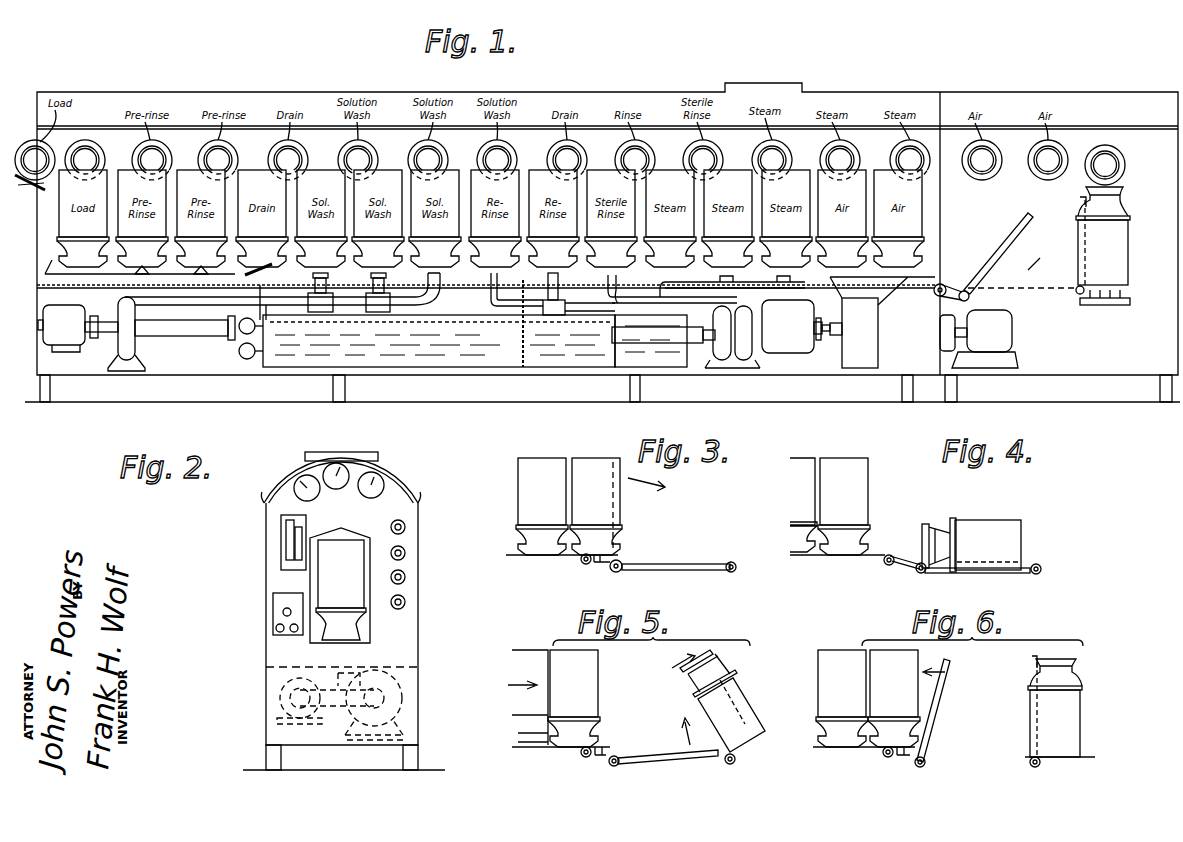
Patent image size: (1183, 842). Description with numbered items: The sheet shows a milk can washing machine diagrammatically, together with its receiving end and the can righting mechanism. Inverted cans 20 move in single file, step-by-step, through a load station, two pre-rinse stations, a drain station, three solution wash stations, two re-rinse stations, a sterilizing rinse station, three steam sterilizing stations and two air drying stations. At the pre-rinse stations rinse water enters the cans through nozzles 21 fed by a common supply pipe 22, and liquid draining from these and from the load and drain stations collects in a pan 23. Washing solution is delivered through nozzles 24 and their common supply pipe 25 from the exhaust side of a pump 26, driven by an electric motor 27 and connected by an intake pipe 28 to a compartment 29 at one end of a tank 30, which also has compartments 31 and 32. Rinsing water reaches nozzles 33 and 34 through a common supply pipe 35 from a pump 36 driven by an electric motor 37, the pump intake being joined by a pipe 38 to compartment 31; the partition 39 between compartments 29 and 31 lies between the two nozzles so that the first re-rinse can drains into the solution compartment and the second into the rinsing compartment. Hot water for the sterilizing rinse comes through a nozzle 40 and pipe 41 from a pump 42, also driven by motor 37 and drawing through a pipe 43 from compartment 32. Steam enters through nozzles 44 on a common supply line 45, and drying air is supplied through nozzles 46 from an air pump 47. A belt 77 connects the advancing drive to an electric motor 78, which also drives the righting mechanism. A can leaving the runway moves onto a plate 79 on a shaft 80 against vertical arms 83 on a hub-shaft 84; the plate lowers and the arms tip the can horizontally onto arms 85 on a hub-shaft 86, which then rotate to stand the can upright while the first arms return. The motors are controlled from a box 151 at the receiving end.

In FIG. 1, the cans 20 is at (62, 212).
In FIG. 2, the cans 20 is at (340, 585).
In FIG. 3, the cans 20 is at (585, 465).
In FIG. 4, the cans 20 is at (840, 466).
In FIG. 5, the cans 20 is at (562, 668).
In FIG. 6, the cans 20 is at (888, 672).
In FIG. 1, the nozzles 21 is at (142, 270).
In FIG. 1, the common supply pipe 22 is at (55, 274).
In FIG. 1, the pan 23 is at (250, 272).
In FIG. 1, the nozzles 24 is at (326, 284).
In FIG. 1, the common supply pipe 25 is at (298, 292).
In FIG. 1, the pump 26 is at (136, 345).
In FIG. 2, the pump 26 is at (402, 698).
In FIG. 1, the electric motor 27 is at (55, 343).
In FIG. 2, the electric motor 27 is at (280, 698).
In FIG. 1, the intake pipe 28 is at (190, 330).
In FIG. 1, the compartment 29 is at (292, 360).
In FIG. 1, the tank 30 is at (525, 360).
In FIG. 1, the compartment 31 is at (575, 362).
In FIG. 1, the compartment 32 is at (662, 360).
In FIG. 1, the nozzle 33 is at (490, 282).
In FIG. 1, the nozzle 34 is at (549, 275).
In FIG. 1, the common supply pipe 35 is at (578, 305).
In FIG. 1, the pump 36 is at (722, 358).
In FIG. 1, the electric motor 37 is at (790, 345).
In FIG. 1, the pipe 38 is at (630, 340).
In FIG. 1, the partition 39 is at (520, 340).
In FIG. 1, the nozzle 40 is at (616, 283).
In FIG. 1, the pipe 41 is at (660, 300).
In FIG. 1, the pump 42 is at (744, 358).
In FIG. 1, the pipe 43 is at (705, 345).
In FIG. 1, the nozzles 44 is at (665, 276).
In FIG. 1, the common supply line 45 is at (812, 280).
In FIG. 1, the nozzles 46 is at (893, 283).
In FIG. 1, the air pump 47 is at (872, 322).
In FIG. 1, the belt 77 is at (940, 345).
In FIG. 1, the electric motor 78 is at (990, 338).
In FIG. 1, the plate 79 is at (955, 278).
In FIG. 3, the plate 79 is at (598, 565).
In FIG. 4, the plate 79 is at (905, 568).
In FIG. 5, the plate 79 is at (600, 758).
In FIG. 6, the plate 79 is at (902, 758).
In FIG. 1, the shaft 80 is at (952, 295).
In FIG. 3, the shaft 80 is at (580, 562).
In FIG. 4, the shaft 80 is at (884, 564).
In FIG. 5, the shaft 80 is at (580, 756).
In FIG. 6, the shaft 80 is at (883, 756).
In FIG. 1, the arms 83 is at (1020, 238).
In FIG. 3, the arms 83 is at (615, 500).
In FIG. 4, the arms 83 is at (965, 573).
In FIG. 5, the arms 83 is at (675, 760).
In FIG. 6, the arms 83 is at (940, 718).
In FIG. 1, the hub-shaft 84 is at (970, 297).
In FIG. 3, the hub-shaft 84 is at (622, 562).
In FIG. 4, the hub-shaft 84 is at (923, 574).
In FIG. 5, the hub-shaft 84 is at (615, 766).
In FIG. 6, the hub-shaft 84 is at (925, 766).
In FIG. 1, the arms 85 is at (1080, 205).
In FIG. 3, the arms 85 is at (665, 572).
In FIG. 4, the arms 85 is at (1036, 574).
In FIG. 5, the arms 85 is at (688, 673).
In FIG. 6, the arms 85 is at (1032, 666).
In FIG. 1, the hub-shaft 86 is at (1080, 296).
In FIG. 3, the hub-shaft 86 is at (735, 570).
In FIG. 4, the hub-shaft 86 is at (1041, 568).
In FIG. 5, the hub-shaft 86 is at (733, 764).
In FIG. 6, the hub-shaft 86 is at (1036, 768).
In FIG. 2, the box 151 is at (272, 603).